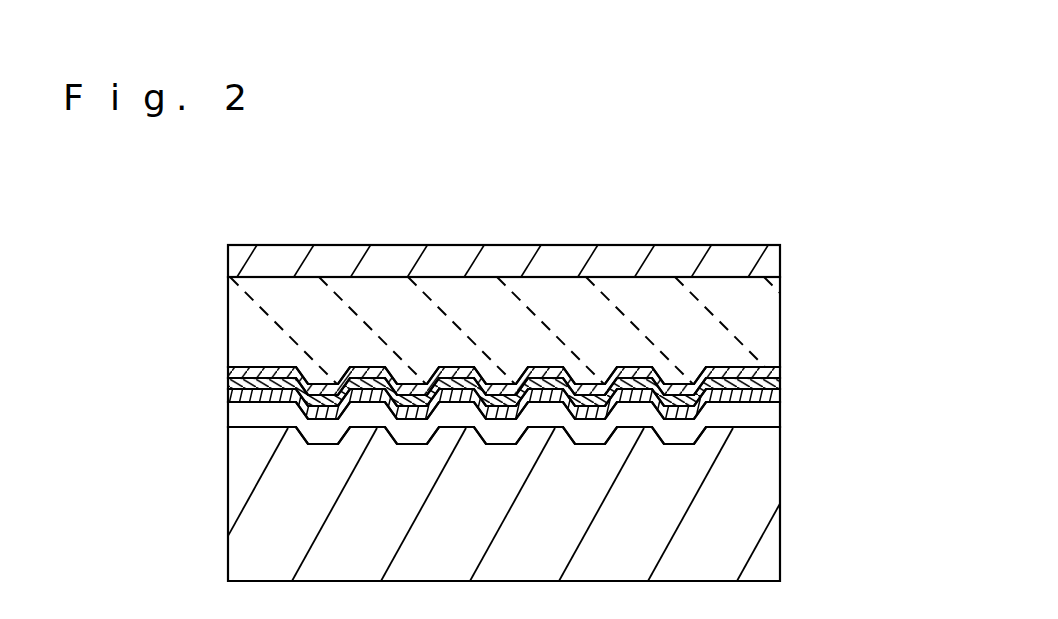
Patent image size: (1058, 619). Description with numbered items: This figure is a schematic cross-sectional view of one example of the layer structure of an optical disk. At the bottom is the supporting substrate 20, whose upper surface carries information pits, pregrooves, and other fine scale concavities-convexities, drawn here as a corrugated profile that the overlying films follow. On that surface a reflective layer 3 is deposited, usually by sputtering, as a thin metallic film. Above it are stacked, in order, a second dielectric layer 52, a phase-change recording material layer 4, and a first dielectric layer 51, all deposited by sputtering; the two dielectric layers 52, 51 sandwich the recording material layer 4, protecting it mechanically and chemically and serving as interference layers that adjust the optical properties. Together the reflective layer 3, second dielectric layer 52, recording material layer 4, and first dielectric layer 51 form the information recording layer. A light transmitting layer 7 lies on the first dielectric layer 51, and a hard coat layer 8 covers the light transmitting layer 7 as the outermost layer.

The hard coat layer 8 is at (775, 260).
The light transmitting layer 7 is at (775, 307).
The first dielectric layer 51 is at (780, 370).
The phase-change recording material layer 4 is at (780, 383).
The second dielectric layer 52 is at (780, 395).
The reflective layer 3 is at (776, 420).
The supporting substrate 20 is at (775, 550).